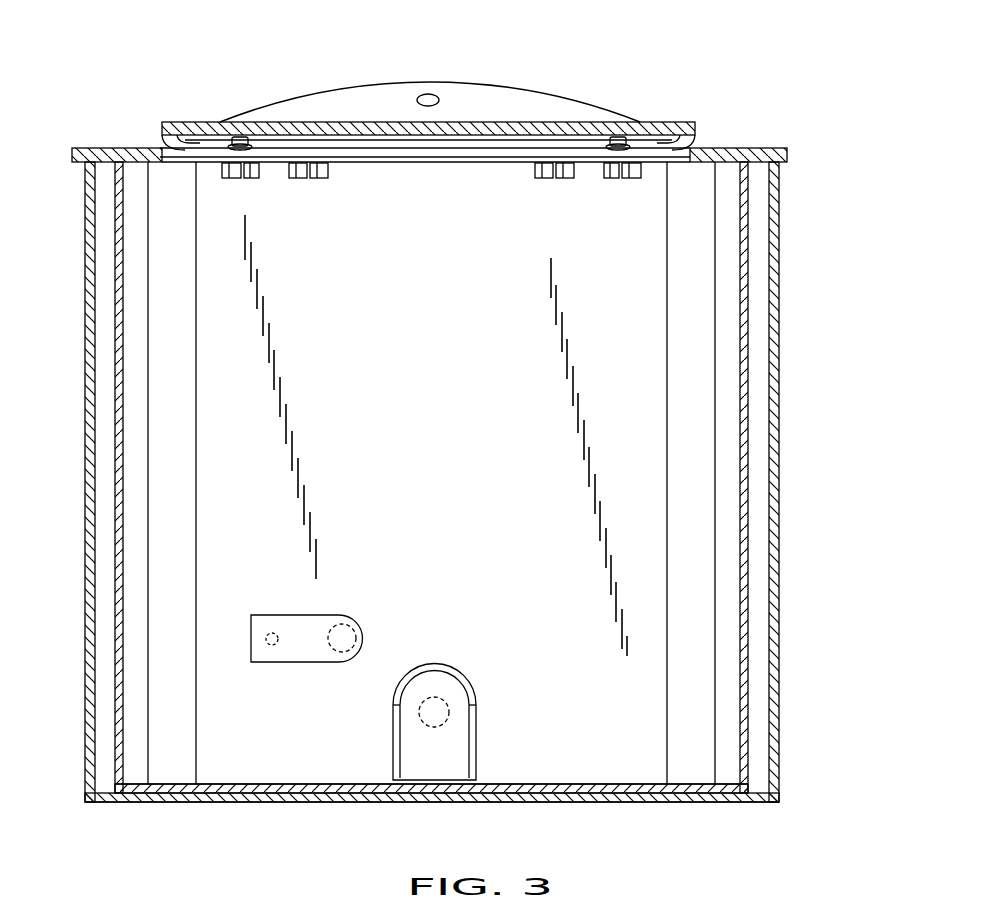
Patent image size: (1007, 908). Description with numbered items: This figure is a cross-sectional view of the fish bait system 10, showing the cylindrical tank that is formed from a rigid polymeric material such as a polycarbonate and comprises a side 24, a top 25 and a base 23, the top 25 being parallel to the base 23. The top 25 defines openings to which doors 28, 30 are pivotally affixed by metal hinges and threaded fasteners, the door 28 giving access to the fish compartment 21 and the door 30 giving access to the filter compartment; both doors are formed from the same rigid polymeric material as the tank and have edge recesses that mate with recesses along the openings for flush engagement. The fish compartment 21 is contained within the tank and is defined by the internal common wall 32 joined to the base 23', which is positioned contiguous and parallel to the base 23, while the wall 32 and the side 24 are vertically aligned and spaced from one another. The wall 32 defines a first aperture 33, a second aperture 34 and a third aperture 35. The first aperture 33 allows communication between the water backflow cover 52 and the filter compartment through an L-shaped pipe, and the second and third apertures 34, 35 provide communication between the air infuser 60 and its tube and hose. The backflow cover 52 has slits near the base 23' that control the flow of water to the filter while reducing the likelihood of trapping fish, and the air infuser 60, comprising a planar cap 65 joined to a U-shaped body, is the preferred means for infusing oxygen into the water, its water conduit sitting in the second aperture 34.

The container assembly 10 is at (851, 110).
The fish compartment 21 is at (700, 490).
The base 23 is at (432, 843).
The base 23' is at (431, 758).
The side 24 is at (90, 470).
The top 25 is at (714, 148).
The door 28 is at (651, 122).
The door 30 is at (565, 96).
The internal common wall 32 is at (120, 415).
The first aperture 33 is at (436, 700).
The second aperture 34 is at (349, 630).
The third aperture 35 is at (268, 620).
The water backflow cover 52 is at (491, 716).
The air infuser 60 is at (304, 690).
The cap 65 is at (316, 654).